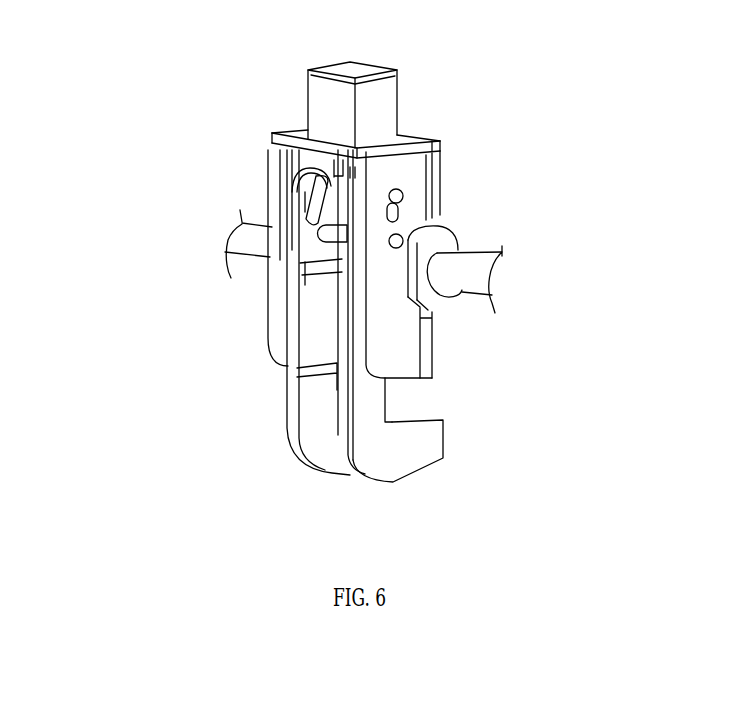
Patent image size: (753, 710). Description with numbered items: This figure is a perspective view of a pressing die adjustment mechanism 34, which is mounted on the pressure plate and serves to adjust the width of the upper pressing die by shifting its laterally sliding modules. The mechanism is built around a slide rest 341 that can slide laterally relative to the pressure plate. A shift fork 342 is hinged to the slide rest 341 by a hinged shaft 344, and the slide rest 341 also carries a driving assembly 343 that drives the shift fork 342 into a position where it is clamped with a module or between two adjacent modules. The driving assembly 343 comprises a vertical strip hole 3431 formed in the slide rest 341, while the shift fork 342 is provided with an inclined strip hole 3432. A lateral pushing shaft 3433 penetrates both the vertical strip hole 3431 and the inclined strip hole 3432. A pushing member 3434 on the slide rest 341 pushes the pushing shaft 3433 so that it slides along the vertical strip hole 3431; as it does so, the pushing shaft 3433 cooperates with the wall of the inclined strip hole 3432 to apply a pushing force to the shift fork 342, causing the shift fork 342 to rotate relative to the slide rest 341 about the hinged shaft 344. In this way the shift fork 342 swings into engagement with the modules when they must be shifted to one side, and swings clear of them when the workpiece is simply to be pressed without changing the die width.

The pressing die adjustment mechanism 34 is at (263, 310).
The slide rest 341 is at (408, 177).
The shift fork 342 is at (373, 437).
The driving assembly 343 is at (272, 135).
The vertical strip hole 3431 is at (296, 170).
The inclined strip hole 3432 is at (312, 219).
The lateral pushing shaft 3433 is at (400, 192).
The pushing member 3434 is at (373, 98).
The hinged shaft 344 is at (424, 240).